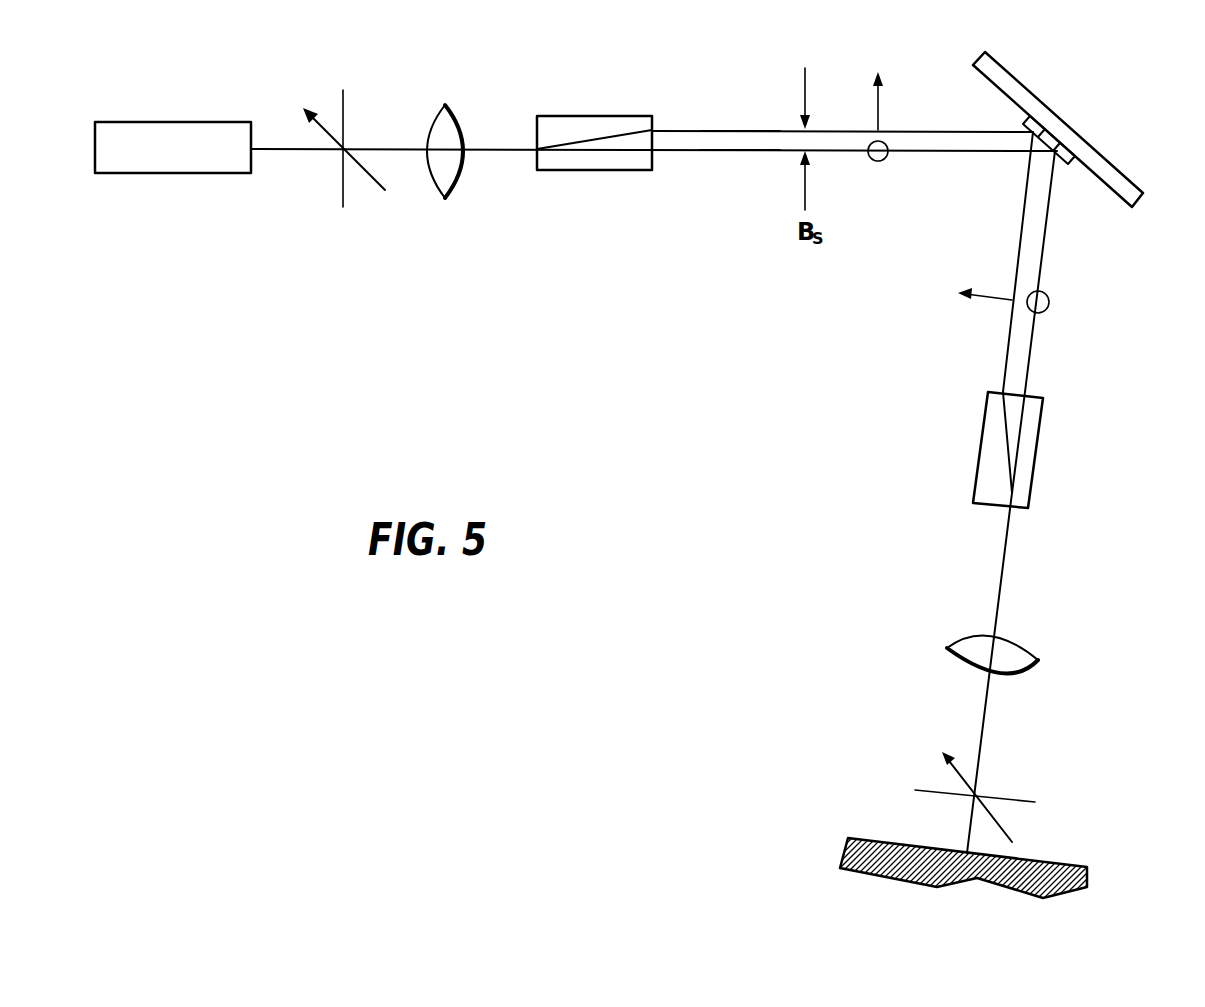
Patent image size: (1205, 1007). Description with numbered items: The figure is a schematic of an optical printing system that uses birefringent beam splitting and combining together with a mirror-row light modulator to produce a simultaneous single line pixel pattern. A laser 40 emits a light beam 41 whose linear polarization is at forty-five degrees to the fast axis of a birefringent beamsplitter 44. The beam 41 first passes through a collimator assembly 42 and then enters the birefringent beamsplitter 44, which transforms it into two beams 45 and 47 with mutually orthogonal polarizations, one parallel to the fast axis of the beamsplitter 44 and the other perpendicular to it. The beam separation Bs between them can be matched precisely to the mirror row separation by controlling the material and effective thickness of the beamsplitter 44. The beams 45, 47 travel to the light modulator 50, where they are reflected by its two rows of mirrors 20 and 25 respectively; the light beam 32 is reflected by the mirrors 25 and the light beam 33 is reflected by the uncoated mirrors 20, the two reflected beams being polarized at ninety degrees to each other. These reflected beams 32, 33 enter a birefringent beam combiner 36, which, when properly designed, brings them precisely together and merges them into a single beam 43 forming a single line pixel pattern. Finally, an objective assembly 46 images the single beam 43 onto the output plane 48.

The laser 40 is at (173, 173).
The light beam 41 is at (297, 149).
The collimator assembly 42 is at (446, 210).
The birefringent beamsplitter 44 is at (568, 116).
The beam 47 is at (742, 130).
The beam 45 is at (742, 153).
The light modulator 50 is at (1083, 107).
The mirrors 25 is at (1030, 127).
The uncoated mirrors 20 is at (1067, 164).
The light beam 32 is at (1022, 238).
The light beam 33 is at (1033, 352).
The birefringent beam combiner 36 is at (985, 450).
The single beam 43 is at (1005, 573).
The objective assembly 46 is at (924, 642).
The output plane 48 is at (1057, 863).